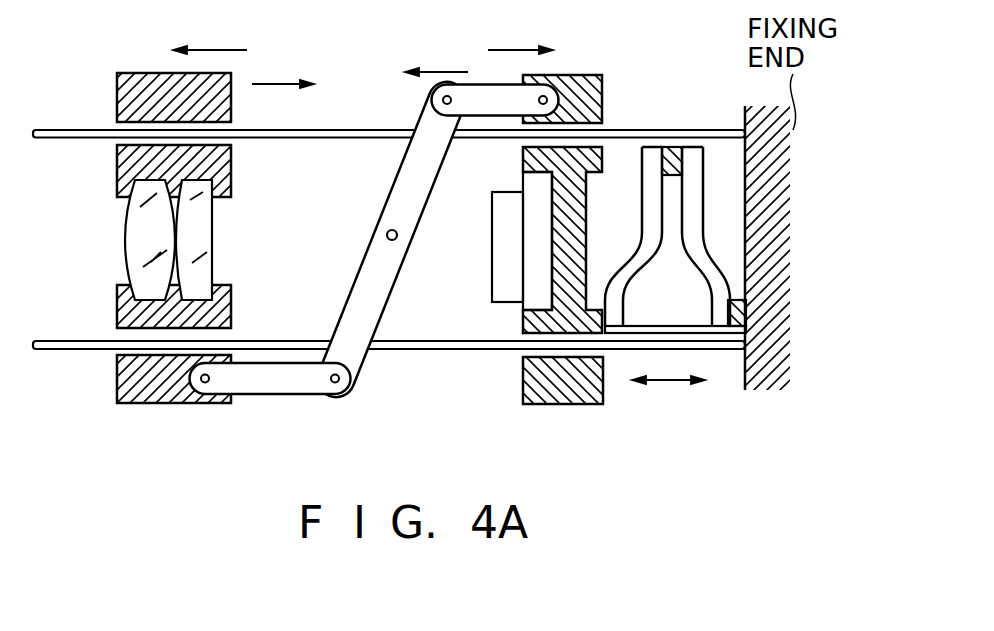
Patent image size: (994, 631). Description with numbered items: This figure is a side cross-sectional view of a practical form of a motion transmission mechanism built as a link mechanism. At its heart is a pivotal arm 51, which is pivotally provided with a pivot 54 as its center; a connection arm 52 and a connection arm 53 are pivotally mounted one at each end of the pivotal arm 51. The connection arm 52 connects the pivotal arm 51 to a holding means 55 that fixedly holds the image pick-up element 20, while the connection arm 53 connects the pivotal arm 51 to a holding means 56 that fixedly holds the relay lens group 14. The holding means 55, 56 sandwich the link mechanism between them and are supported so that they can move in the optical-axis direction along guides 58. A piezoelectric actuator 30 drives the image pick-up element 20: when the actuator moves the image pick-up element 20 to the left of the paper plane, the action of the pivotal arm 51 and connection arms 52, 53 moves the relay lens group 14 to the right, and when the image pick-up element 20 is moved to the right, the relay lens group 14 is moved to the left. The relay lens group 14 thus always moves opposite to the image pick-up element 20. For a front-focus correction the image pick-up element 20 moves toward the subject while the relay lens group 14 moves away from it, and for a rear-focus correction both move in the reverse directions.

The relay lens group 14 is at (133, 246).
The image pick-up element 20 is at (492, 293).
The piezoelectric actuator 30 is at (646, 168).
The pivotal arm 51 is at (350, 290).
The connection arm 52 is at (486, 96).
The connection arm 53 is at (282, 384).
The pivot 54 is at (386, 236).
The holding means 55 is at (592, 75).
The holding means 56 is at (158, 404).
The guides 58 is at (63, 130).